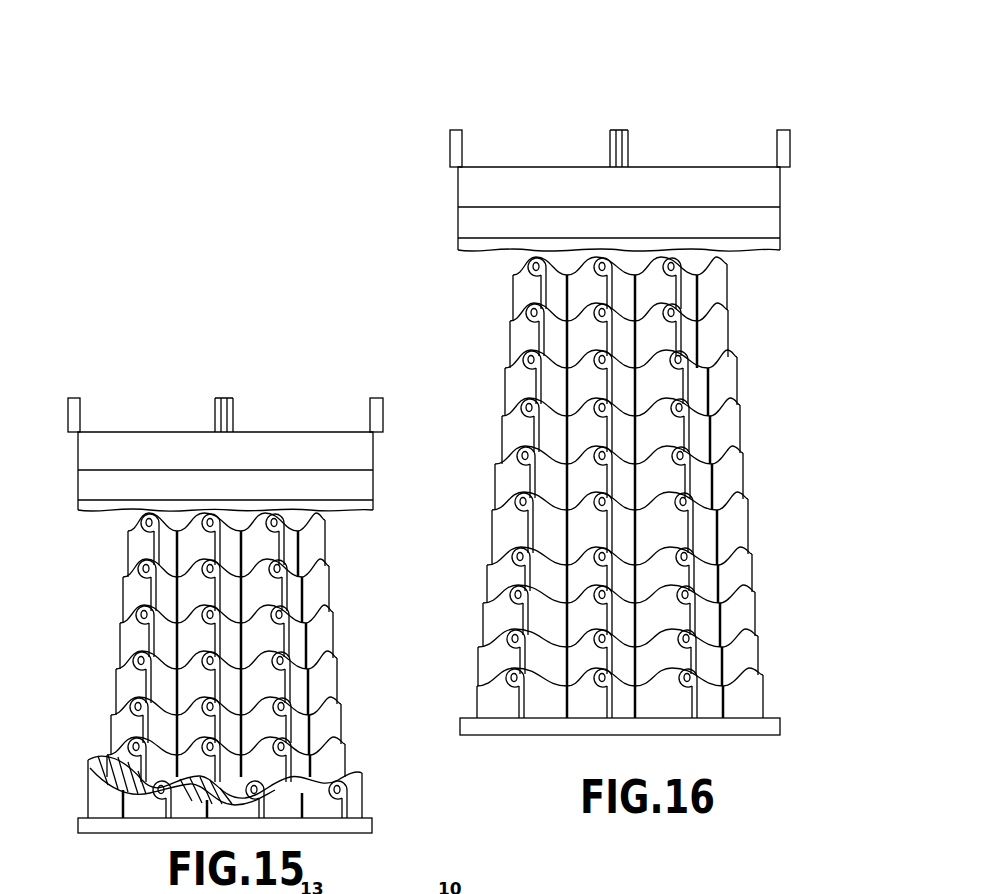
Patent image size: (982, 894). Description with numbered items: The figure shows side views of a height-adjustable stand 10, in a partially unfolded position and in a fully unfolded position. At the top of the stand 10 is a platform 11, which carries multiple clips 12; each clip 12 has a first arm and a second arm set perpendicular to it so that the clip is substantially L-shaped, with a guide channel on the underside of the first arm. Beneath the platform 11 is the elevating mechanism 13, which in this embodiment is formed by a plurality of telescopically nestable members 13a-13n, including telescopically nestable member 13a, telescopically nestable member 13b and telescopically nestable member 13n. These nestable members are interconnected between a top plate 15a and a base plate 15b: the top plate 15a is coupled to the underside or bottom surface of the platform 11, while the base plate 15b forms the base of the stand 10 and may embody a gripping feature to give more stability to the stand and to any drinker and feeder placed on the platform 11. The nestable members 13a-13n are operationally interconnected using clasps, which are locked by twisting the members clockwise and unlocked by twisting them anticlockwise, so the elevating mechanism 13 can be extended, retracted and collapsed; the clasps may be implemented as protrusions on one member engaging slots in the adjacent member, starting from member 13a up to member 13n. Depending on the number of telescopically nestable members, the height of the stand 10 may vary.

In FIG. 15, the height-adjustable stand 10 is at (255, 296).
In FIG. 16, the height-adjustable stand 10 is at (711, 64).
In FIG. 15, the platform 11 is at (128, 433).
In FIG. 16, the platform 11 is at (505, 167).
In FIG. 15, the clips 12 is at (80, 430).
In FIG. 16, the clips 12 is at (462, 148).
In FIG. 15, the elevating mechanism 13 is at (354, 670).
In FIG. 16, the elevating mechanism 13 is at (747, 473).
In FIG. 15, the telescopically nestable member 13n is at (305, 548).
In FIG. 16, the telescopically nestable member 13n is at (728, 289).
In FIG. 15, the telescopically nestable member 13a is at (352, 800).
In FIG. 16, the telescopically nestable member 13a is at (740, 693).
In FIG. 16, the telescopically nestable member 13b is at (747, 638).
In FIG. 15, the top plate 15a is at (97, 510).
In FIG. 15, the base plate 15b is at (370, 818).
In FIG. 16, the base plate 15b is at (778, 722).